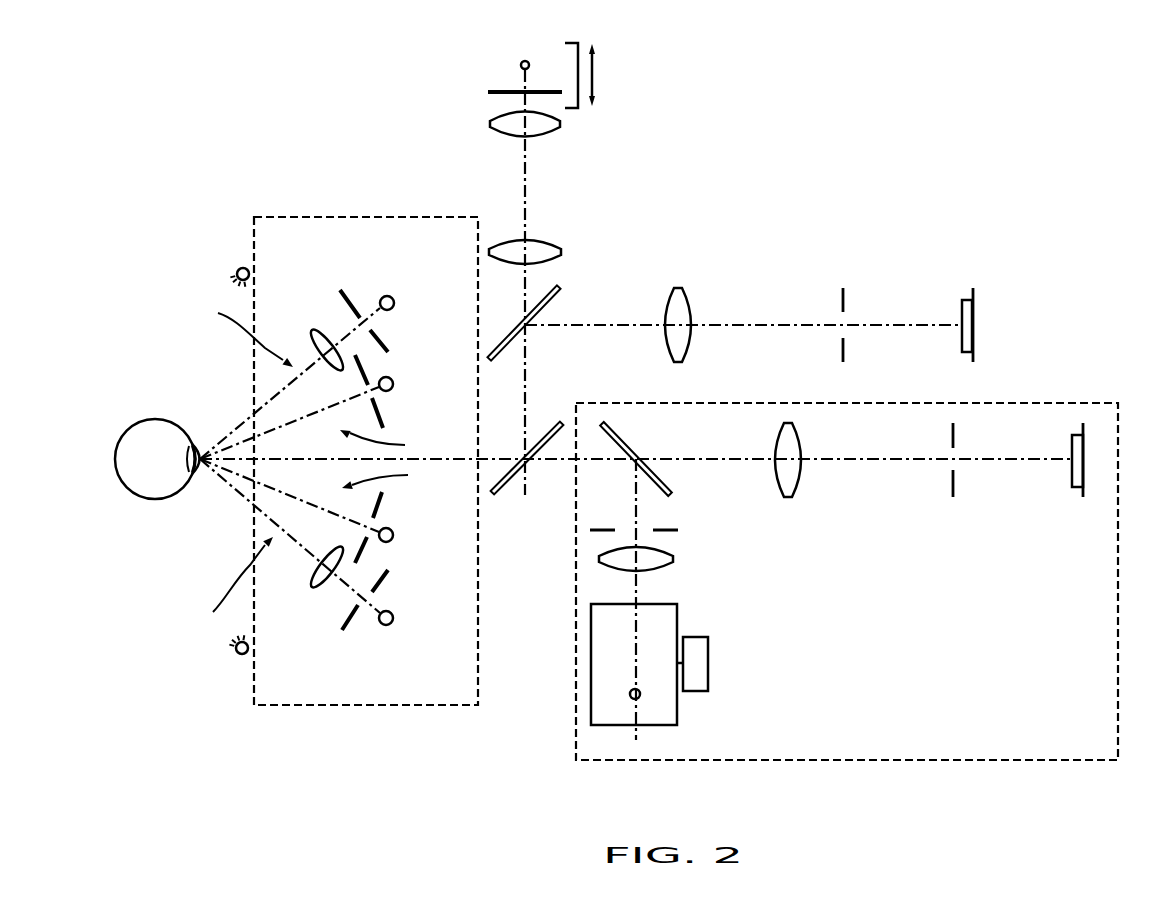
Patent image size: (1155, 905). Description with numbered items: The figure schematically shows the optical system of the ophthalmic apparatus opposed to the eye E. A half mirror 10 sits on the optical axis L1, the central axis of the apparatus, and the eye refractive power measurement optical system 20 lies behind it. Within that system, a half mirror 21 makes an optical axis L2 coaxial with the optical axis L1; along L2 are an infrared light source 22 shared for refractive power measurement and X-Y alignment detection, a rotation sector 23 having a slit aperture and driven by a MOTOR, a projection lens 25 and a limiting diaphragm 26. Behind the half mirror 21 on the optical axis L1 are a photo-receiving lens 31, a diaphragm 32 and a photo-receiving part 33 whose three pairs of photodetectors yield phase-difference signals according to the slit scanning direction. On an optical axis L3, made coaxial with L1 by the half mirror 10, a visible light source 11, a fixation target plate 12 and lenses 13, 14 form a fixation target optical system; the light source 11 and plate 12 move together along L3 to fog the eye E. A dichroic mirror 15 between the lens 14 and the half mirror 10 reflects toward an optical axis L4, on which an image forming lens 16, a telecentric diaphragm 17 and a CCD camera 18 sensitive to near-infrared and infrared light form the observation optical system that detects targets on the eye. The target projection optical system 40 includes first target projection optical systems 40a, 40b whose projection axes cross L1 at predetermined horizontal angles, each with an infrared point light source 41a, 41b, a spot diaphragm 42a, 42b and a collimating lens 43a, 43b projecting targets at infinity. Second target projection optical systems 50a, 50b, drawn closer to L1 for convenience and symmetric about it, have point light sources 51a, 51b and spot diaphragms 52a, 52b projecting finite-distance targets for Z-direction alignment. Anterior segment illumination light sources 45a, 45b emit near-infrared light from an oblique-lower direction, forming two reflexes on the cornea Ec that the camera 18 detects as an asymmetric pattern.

The half mirror 10 is at (522, 477).
The light source 11 is at (521, 64).
The fixation target plate 12 is at (498, 93).
The lens 13 is at (503, 128).
The lens 14 is at (549, 240).
The dichroic mirror 15 is at (558, 293).
The image forming lens 16 is at (680, 312).
The telecentric diaphragm 17 is at (845, 310).
The CCD camera 18 is at (975, 305).
The eye refractive power measurement optical system 20 is at (1073, 403).
The half mirror 21 is at (627, 442).
The light source 22 is at (628, 695).
The rotation sector 23 is at (680, 612).
The projection lens 25 is at (655, 561).
The limiting diaphragm 26 is at (668, 528).
The photo-receiving lens 31 is at (789, 482).
The diaphragm 32 is at (955, 477).
The photo-receiving part 33 is at (1073, 490).
The target projection optical system 40 is at (387, 217).
The first target projection optical system 40a is at (235, 327).
The first target projection optical system 40b is at (223, 587).
The point light source 41a is at (384, 296).
The point light source 41b is at (383, 626).
The spot diaphragm 42a is at (340, 290).
The spot diaphragm 42b is at (342, 630).
The collimating lens 43a is at (315, 340).
The collimating lens 43b is at (312, 583).
The anterior segment illumination light source 45a is at (237, 269).
The anterior segment illumination light source 45b is at (237, 653).
The second target projection optical system 50a is at (399, 443).
The second target projection optical system 50b is at (400, 477).
The point light source 51a is at (393, 381).
The point light source 51b is at (393, 536).
The spot diaphragm 52a is at (383, 412).
The spot diaphragm 52b is at (380, 505).
The eye E is at (127, 458).
The cornea Ec is at (201, 474).
The optical axis L1 is at (900, 462).
The optical axis L2 is at (633, 583).
The optical axis L3 is at (525, 383).
The optical axis L4 is at (768, 325).
The motor MOTOR is at (705, 680).